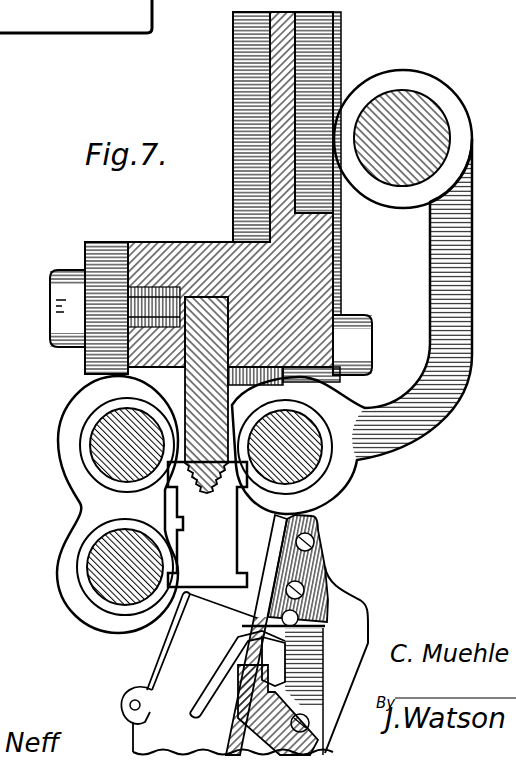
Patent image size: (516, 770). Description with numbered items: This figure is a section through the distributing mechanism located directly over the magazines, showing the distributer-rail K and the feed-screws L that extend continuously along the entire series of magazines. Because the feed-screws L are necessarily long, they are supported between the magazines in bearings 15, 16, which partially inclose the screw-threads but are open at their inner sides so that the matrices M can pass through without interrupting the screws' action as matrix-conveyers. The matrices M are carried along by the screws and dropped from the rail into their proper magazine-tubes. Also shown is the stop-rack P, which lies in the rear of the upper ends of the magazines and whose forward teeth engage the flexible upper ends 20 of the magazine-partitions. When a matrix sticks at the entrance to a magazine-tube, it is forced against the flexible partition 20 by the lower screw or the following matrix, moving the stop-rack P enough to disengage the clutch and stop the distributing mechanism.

The feed-screws L is at (97, 435).
The bearing 15 is at (78, 478).
The bearing 16 is at (345, 477).
The distributer-rail K is at (206, 395).
The matrices M is at (207, 524).
The stop-rack P is at (313, 623).
The flexible upper ends of the magazine-partitions 20 is at (227, 673).